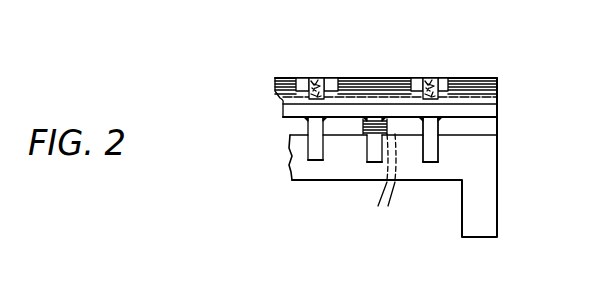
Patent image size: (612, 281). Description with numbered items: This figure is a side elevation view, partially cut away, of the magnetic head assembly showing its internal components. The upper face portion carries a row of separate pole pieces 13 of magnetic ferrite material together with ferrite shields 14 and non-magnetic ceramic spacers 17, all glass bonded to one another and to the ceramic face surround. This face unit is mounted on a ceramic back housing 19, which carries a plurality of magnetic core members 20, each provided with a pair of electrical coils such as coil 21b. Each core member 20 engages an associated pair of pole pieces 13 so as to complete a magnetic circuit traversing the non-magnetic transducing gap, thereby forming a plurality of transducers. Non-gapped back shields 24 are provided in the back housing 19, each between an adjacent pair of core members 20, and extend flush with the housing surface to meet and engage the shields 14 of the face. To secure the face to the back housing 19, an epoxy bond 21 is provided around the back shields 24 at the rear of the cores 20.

The pole piece 13 is at (378, 78).
The shield 14 is at (430, 79).
The spacer 17 is at (332, 79).
The back housing 19 is at (498, 138).
The core member 20 is at (369, 162).
The epoxy bond 21 is at (308, 121).
The electrical coil 21b is at (363, 120).
The back shield 24 is at (430, 158).